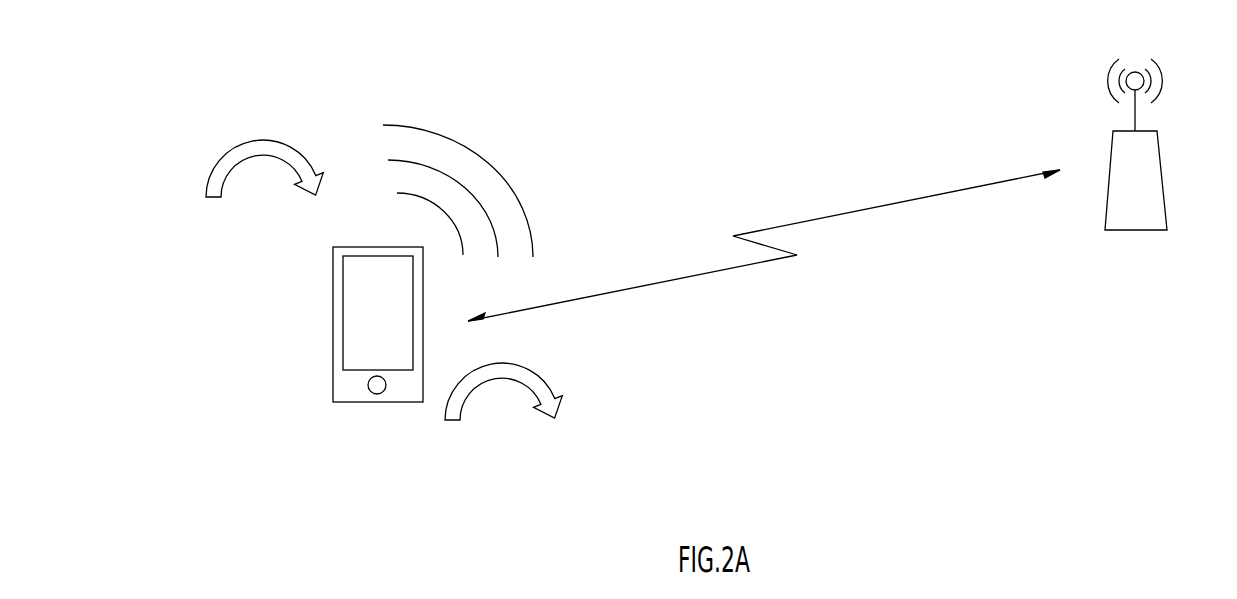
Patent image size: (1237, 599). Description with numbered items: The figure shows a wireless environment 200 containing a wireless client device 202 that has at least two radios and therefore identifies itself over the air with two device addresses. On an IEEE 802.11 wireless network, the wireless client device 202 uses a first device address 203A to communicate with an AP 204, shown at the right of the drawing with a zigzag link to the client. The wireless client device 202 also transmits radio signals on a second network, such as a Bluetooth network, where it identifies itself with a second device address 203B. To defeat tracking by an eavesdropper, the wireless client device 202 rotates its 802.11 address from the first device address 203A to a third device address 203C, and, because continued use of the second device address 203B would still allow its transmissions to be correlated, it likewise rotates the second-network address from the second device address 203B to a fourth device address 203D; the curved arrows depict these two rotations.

The wireless environment 200 is at (148, 100).
The wireless client device 202 is at (333, 323).
The AP 204 is at (1162, 169).
The first device address 203A is at (447, 457).
The second device address 203B is at (208, 233).
The third device address 203C is at (543, 457).
The fourth device address 203D is at (305, 233).